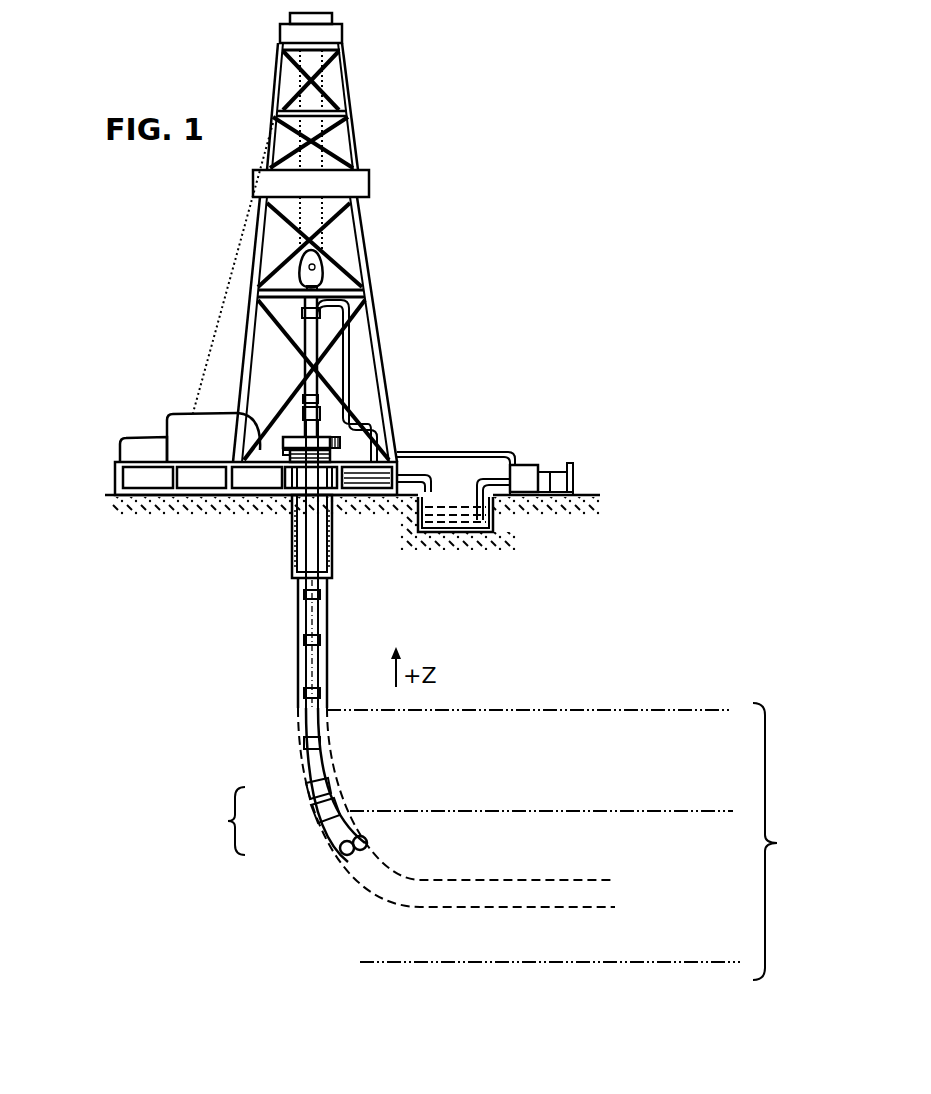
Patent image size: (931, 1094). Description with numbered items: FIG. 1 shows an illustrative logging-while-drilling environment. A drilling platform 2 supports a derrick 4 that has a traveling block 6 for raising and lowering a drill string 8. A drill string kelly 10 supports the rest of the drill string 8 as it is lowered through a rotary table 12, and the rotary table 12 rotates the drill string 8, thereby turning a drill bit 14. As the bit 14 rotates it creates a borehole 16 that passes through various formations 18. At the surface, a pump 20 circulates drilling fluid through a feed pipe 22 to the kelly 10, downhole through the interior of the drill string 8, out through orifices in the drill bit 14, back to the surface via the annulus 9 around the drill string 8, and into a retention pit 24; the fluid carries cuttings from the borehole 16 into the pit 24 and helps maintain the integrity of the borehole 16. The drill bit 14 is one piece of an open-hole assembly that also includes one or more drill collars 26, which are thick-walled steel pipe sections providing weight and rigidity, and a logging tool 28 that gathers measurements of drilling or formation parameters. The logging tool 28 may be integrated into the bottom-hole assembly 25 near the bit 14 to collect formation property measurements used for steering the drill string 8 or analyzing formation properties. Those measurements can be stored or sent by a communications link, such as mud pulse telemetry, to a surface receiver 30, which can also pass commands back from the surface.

The drilling platform 2 is at (115, 467).
The derrick 4 is at (355, 137).
The traveling block 6 is at (313, 262).
The drill string 8 is at (317, 623).
The annulus 9 is at (300, 627).
The drill string kelly 10 is at (311, 333).
The rotary table 12 is at (340, 434).
The drill bit 14 is at (362, 843).
The borehole 16 is at (327, 628).
The formations 18 is at (566, 841).
The pump 20 is at (523, 470).
The feed pipe 22 is at (467, 452).
The retention pit 24 is at (433, 528).
The bottom-hole assembly 25 is at (297, 785).
The drill collars 26 is at (342, 833).
The logging tool 28 is at (317, 802).
The surface receiver 30 is at (320, 400).